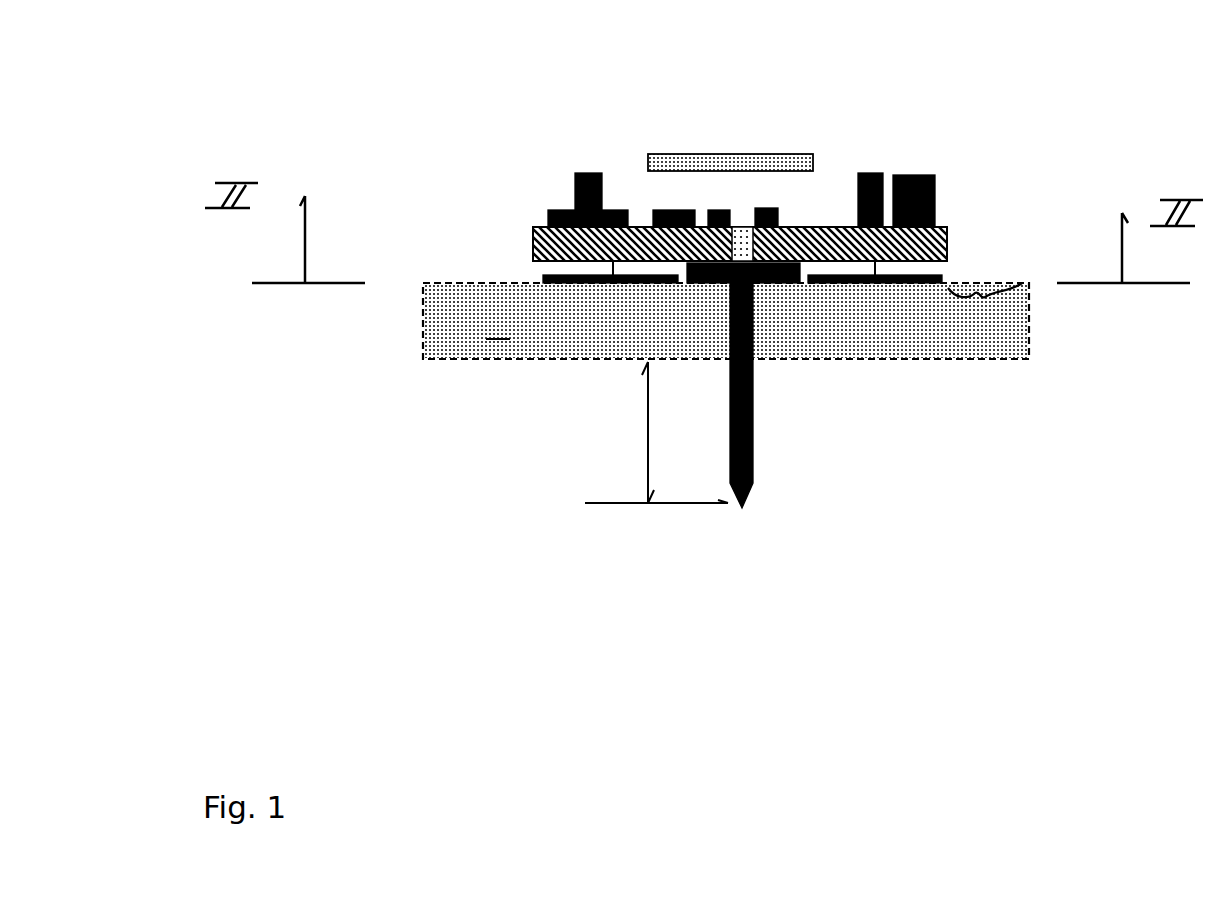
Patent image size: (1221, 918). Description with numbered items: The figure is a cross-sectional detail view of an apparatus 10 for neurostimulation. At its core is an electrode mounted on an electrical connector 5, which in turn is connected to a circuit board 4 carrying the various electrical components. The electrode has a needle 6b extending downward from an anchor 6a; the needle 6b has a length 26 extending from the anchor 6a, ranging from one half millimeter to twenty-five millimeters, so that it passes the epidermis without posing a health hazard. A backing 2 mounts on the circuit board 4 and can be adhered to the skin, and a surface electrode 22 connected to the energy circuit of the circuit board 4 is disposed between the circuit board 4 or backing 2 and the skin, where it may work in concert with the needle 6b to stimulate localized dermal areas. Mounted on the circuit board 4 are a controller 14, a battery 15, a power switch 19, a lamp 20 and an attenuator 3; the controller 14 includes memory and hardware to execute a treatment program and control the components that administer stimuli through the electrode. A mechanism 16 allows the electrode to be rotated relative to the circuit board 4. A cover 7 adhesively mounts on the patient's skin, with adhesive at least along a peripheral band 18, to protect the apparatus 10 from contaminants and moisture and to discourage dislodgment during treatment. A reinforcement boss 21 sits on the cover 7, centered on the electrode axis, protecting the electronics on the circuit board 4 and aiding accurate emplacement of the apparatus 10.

The apparatus 10 is at (1044, 60).
The backing 2 is at (540, 267).
The attenuator 3 is at (575, 190).
The circuit board 4 is at (940, 238).
The electrical connector 5 is at (747, 198).
The anchor 6a is at (705, 283).
The needle 6b is at (730, 335).
The cover 7 is at (983, 257).
The controller 14 is at (657, 210).
The battery 15 is at (703, 211).
The mechanism 16 is at (778, 220).
The peripheral band 18 is at (985, 311).
The power switch 19 is at (877, 173).
The lamp 20 is at (917, 175).
The reinforcement boss 21 is at (745, 155).
The surface electrode 22 is at (905, 287).
The length 26 is at (648, 437).